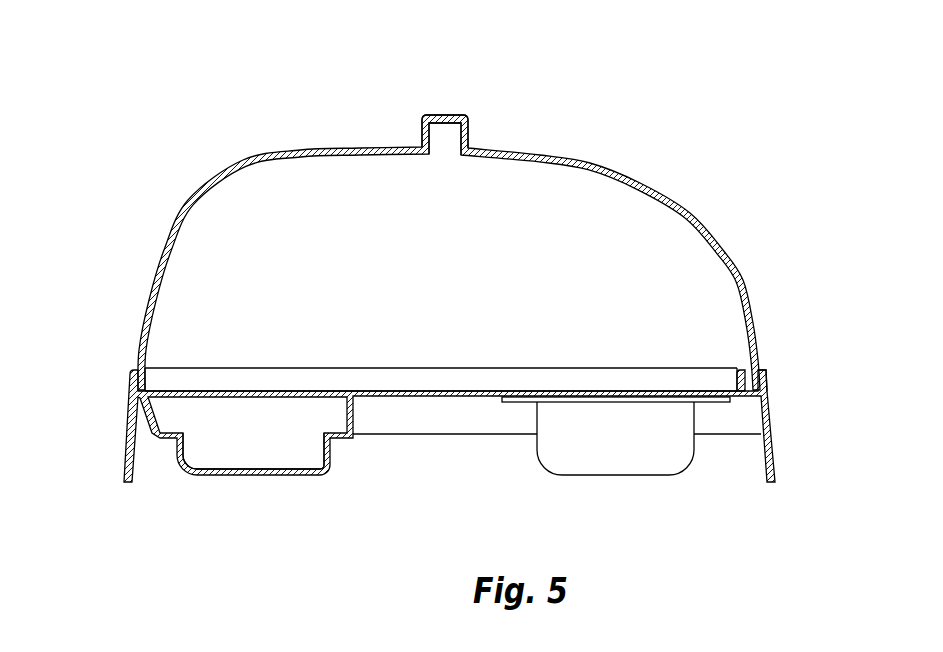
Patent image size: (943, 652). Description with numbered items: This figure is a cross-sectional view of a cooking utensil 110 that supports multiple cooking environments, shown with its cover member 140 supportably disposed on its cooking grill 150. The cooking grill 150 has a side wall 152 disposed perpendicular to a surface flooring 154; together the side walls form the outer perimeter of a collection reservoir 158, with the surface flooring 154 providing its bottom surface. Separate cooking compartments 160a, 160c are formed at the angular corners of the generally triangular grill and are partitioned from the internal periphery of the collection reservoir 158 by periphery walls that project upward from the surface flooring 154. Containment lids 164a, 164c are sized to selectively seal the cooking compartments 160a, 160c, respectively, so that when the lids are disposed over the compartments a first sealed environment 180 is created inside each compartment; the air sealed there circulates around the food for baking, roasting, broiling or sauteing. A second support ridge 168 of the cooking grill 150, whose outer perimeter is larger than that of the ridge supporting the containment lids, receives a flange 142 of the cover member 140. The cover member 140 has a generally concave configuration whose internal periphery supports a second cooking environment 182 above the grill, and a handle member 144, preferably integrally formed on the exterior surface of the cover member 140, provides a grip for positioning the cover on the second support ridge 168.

The cooking utensil 110 is at (149, 157).
The cover member 140 is at (754, 267).
The flange 142 is at (768, 387).
The handle member 144 is at (445, 115).
The cooking grill 150 is at (106, 401).
The side wall 152 is at (465, 425).
The surface flooring 154 is at (403, 436).
The collection reservoir 158 is at (390, 382).
The cooking compartment 160a is at (280, 461).
The cooking compartment 160c is at (647, 455).
The containment lid 164a is at (176, 377).
The containment lid 164c is at (683, 377).
The second support ridge 168 is at (766, 370).
The first sealed environment 180 is at (185, 452).
The second cooking environment 182 is at (155, 298).